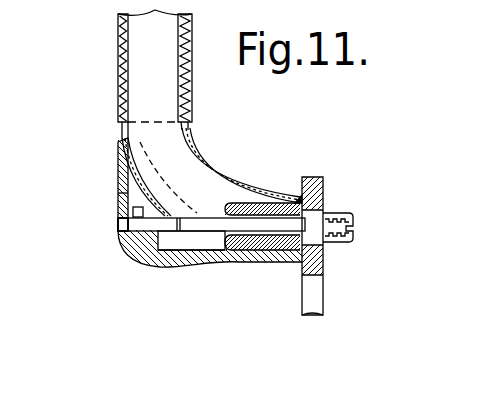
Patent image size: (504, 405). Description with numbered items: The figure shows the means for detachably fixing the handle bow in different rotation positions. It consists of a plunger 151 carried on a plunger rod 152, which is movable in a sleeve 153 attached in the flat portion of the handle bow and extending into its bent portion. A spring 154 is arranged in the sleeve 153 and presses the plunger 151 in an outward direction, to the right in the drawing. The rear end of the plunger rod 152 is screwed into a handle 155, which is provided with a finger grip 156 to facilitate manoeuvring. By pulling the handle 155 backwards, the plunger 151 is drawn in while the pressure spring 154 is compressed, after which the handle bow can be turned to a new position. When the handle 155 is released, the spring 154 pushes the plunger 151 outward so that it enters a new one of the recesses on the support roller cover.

The plunger 151 is at (335, 213).
The plunger rod 152 is at (207, 213).
The sleeve 153 is at (263, 193).
The spring 154 is at (268, 258).
The handle 155 is at (125, 198).
The finger grip 156 is at (210, 268).